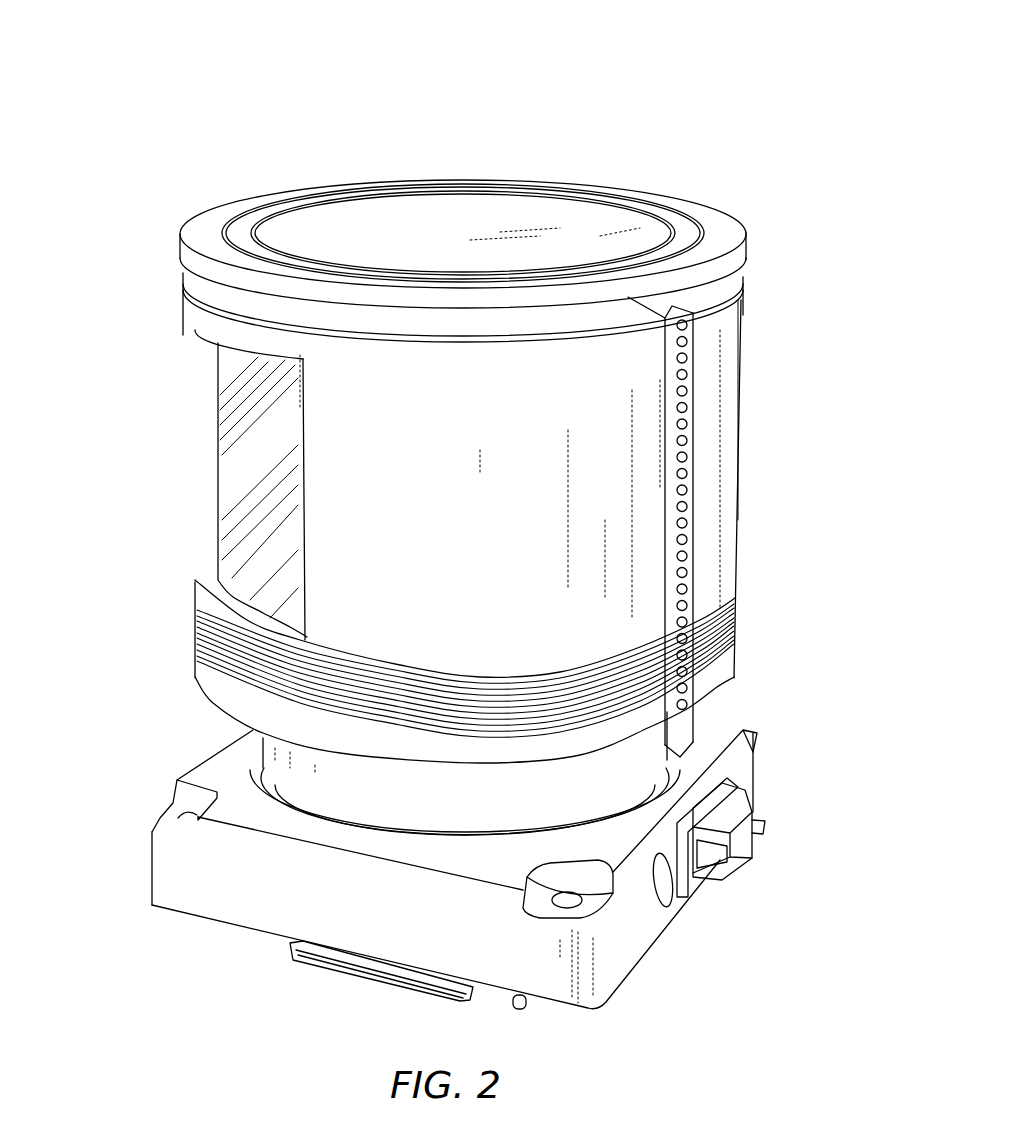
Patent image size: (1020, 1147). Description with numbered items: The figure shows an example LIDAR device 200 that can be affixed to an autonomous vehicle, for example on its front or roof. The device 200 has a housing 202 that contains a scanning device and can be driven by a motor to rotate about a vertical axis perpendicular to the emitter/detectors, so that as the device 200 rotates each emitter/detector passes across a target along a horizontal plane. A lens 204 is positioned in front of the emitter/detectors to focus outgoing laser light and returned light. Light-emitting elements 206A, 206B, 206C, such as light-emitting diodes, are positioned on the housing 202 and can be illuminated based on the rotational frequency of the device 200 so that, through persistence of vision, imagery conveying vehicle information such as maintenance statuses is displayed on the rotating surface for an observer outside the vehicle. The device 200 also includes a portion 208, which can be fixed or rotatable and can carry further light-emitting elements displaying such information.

The LIDAR device 200 is at (133, 60).
The housing 202 is at (375, 368).
The lens 204 is at (250, 523).
The light-emitting element 206A is at (688, 320).
The light-emitting element 206B is at (690, 548).
The light-emitting element 206C is at (690, 710).
The portion 208 is at (746, 244).